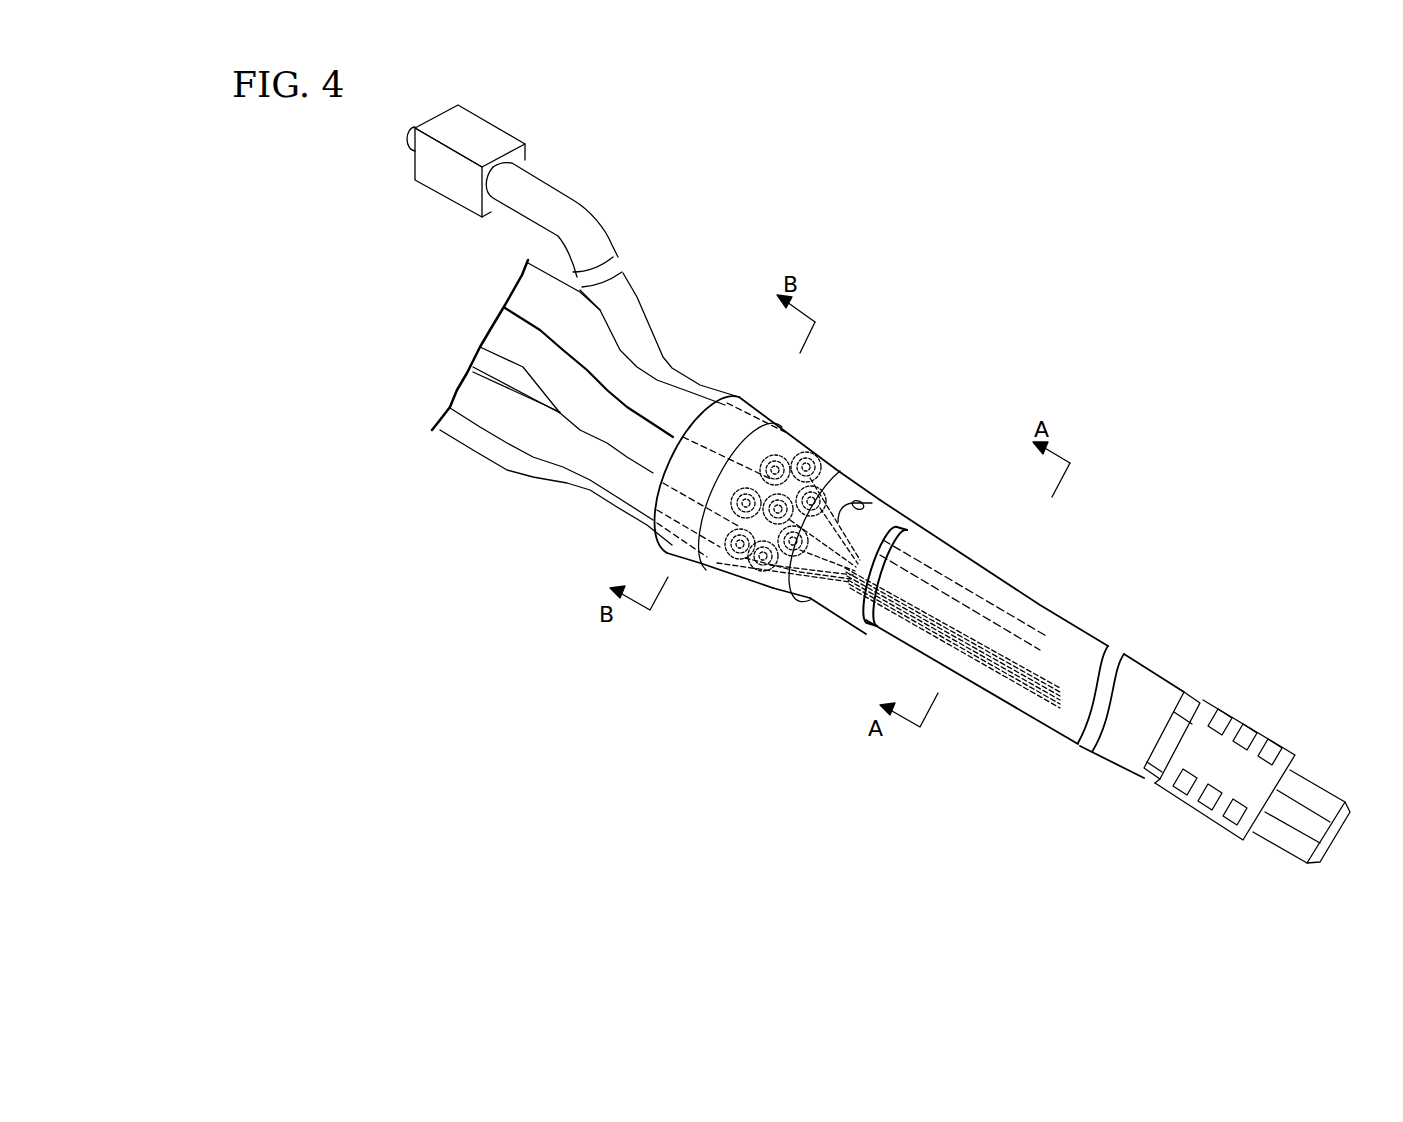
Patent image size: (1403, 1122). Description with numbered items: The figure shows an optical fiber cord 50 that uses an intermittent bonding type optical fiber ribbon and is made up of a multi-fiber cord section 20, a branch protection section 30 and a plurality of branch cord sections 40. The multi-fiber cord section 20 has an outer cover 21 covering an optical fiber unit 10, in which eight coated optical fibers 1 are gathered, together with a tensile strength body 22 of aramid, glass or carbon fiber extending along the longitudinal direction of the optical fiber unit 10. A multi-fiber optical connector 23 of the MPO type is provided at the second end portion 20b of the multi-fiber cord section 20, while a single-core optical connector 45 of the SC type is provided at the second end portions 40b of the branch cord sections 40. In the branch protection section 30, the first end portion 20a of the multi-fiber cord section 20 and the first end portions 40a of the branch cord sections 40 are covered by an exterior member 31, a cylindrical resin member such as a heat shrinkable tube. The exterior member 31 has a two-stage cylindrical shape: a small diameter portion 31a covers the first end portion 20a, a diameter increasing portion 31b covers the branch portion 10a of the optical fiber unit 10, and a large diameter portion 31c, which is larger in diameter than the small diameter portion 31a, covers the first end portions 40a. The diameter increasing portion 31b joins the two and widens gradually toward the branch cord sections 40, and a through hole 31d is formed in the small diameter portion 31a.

The coated optical fiber 1 is at (1020, 687).
The optical fiber unit 10 is at (967, 668).
The branch portion 10a is at (812, 585).
The multi-fiber cord section 20 is at (952, 550).
The first end portion 20a is at (872, 612).
The second end portion 20b is at (1120, 777).
The outer cover 21 is at (1048, 632).
The tensile strength body 22 is at (1053, 623).
The multi-fiber optical connector 23 is at (1240, 720).
The branch protection section 30 is at (797, 402).
The exterior member 31 is at (767, 585).
The small diameter portion 31a is at (837, 607).
The diameter increasing portion 31b is at (773, 588).
The large diameter portion 31c is at (688, 553).
The through hole 31d is at (860, 503).
The branch cord section 40 is at (628, 313).
The first end portion 40a is at (705, 532).
The second end portion 40b is at (507, 183).
The single-core optical connector 45 is at (442, 178).
The optical fiber cord 50 is at (998, 349).